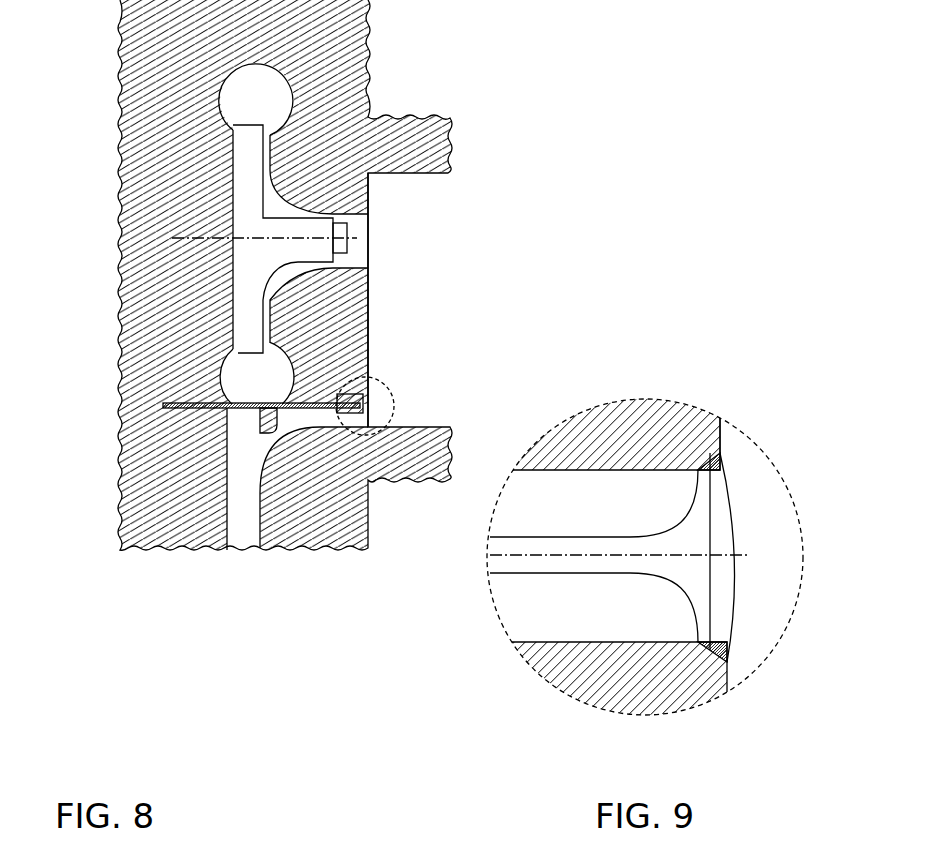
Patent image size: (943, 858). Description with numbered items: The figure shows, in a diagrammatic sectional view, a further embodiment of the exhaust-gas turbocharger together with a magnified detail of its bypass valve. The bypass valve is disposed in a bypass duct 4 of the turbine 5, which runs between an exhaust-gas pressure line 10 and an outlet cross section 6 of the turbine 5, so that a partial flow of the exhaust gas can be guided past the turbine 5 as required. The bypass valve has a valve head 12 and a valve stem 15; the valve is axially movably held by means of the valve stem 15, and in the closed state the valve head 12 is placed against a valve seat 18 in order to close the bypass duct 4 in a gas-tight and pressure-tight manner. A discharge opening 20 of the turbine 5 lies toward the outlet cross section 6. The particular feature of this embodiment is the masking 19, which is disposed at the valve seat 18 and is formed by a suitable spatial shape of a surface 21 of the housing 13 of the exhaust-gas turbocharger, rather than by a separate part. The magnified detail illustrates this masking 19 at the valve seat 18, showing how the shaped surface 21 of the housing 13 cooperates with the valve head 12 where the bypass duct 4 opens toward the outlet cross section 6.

In FIG. 8, the bypass duct 4 is at (372, 380).
In FIG. 9, the bypass duct 4 is at (625, 519).
In FIG. 8, the turbine 5 is at (255, 204).
In FIG. 8, the outlet cross section 6 is at (517, 359).
In FIG. 9, the outlet cross section 6 is at (829, 466).
In FIG. 8, the exhaust-gas pressure line 10 is at (240, 457).
In FIG. 8, the valve head 12 is at (363, 408).
In FIG. 9, the valve head 12 is at (692, 580).
In FIG. 8, the housing 13 is at (355, 143).
In FIG. 9, the housing 13 is at (642, 675).
In FIG. 8, the valve stem 15 is at (262, 401).
In FIG. 9, the valve seat 18 is at (703, 458).
In FIG. 9, the masking 19 is at (738, 642).
In FIG. 8, the discharge opening 20 is at (350, 231).
In FIG. 8, the surface 21 is at (368, 310).
In FIG. 9, the surface 21 is at (724, 442).